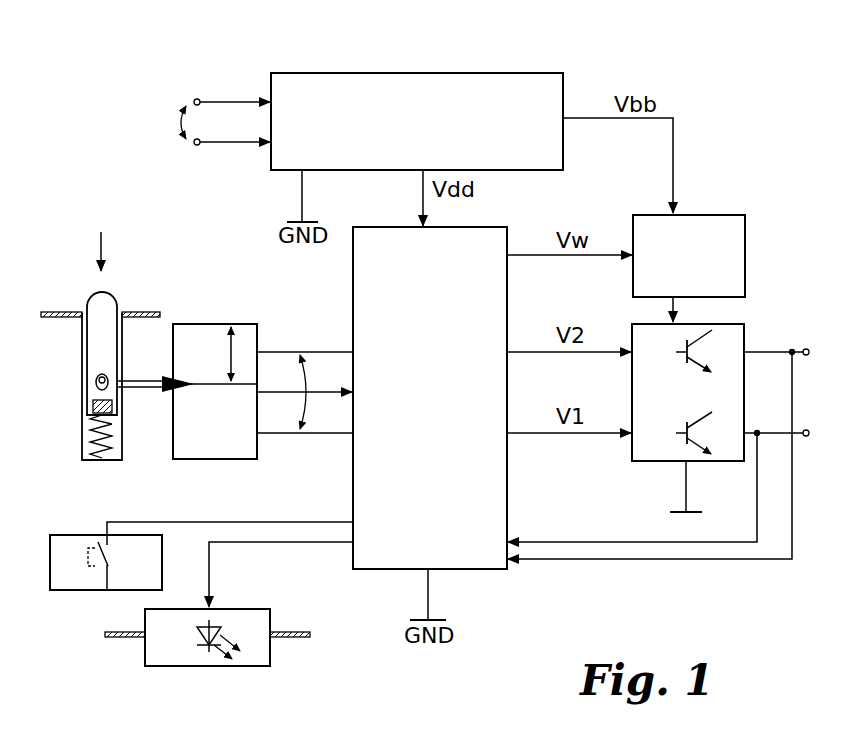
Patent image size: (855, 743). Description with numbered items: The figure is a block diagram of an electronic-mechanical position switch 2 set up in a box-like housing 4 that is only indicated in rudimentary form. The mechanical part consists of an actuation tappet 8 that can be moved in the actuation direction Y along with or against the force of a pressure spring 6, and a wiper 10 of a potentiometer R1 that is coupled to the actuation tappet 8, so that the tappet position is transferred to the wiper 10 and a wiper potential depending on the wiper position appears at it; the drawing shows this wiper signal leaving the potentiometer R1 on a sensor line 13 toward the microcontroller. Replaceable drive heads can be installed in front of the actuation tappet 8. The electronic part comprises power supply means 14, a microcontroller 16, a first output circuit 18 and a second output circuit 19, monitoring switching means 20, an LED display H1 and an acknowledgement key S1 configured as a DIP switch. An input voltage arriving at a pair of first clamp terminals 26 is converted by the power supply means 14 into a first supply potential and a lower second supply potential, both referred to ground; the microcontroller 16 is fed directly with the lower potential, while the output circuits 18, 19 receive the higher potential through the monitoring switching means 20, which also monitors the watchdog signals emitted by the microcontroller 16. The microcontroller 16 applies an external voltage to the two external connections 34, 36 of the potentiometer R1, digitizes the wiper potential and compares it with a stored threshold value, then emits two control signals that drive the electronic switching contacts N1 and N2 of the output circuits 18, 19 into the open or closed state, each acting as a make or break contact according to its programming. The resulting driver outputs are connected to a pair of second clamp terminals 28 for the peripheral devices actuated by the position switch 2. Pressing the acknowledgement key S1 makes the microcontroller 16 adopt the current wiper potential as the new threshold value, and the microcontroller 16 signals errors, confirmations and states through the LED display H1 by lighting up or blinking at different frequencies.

The electronic-mechanical position switch 2 is at (425, 46).
The housing 4 is at (158, 311).
The pressure spring 6 is at (115, 440).
The actuation tappet 8 is at (103, 298).
The wiper 10 is at (145, 378).
The sensor output line 13 is at (259, 391).
The power supply means 14 is at (508, 87).
The microcontroller 16 is at (480, 233).
The first output circuit 18 is at (652, 455).
The second output circuit 19 is at (642, 340).
The monitoring switching means 20 is at (706, 223).
The first clamp terminals 26 is at (201, 104).
The second clamp terminals 28 is at (658, 441).
The external connection of the potentiometer 34 is at (262, 348).
The external connection of the potentiometer 36 is at (262, 437).
The potentiometer R1 is at (210, 324).
The acknowledgement key S1 is at (64, 586).
The LED display H1 is at (258, 618).
The first electronic switching contact N1 is at (704, 434).
The second electronic switching contact N2 is at (714, 332).
The actuation direction Y is at (102, 244).